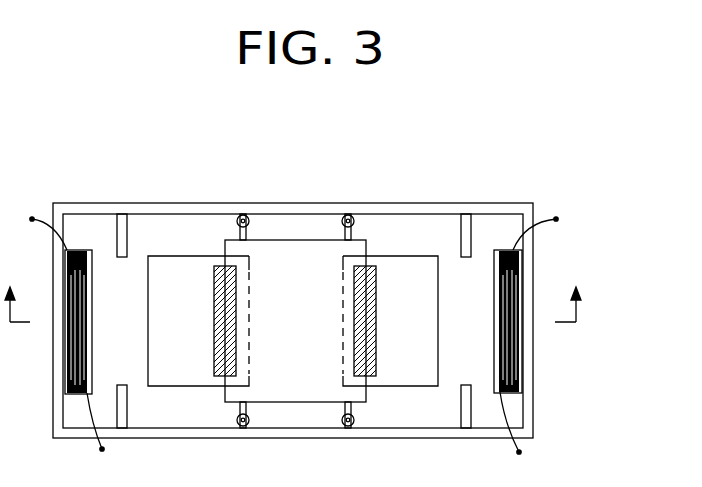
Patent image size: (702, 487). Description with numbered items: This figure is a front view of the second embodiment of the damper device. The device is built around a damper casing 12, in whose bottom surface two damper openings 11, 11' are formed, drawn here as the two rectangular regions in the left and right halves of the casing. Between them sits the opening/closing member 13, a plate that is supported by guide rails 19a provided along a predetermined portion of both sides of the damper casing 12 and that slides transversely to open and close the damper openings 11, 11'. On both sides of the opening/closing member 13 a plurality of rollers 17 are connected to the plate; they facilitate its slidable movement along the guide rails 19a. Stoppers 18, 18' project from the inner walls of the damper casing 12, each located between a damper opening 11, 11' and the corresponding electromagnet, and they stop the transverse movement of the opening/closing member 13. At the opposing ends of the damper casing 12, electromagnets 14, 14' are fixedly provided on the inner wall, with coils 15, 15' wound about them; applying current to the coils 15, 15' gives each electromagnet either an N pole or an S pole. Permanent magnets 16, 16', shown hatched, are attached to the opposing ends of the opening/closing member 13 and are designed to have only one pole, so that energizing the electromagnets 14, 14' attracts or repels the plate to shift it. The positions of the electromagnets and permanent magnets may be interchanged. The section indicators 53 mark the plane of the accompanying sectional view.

The damper opening 11 is at (198, 270).
The damper opening 11' is at (390, 270).
The damper casing 12 is at (114, 204).
The opening/closing member 13 is at (280, 240).
The electromagnet 14 is at (49, 322).
The electromagnet 14' is at (547, 325).
The coil 15 is at (72, 274).
The coil 15' is at (524, 274).
The permanent magnet 16 is at (219, 372).
The permanent magnet 16' is at (378, 376).
The roller 17 is at (253, 204).
The stopper 18 is at (143, 316).
The stopper 18' is at (451, 320).
The guide rail 19a is at (522, 210).
The section line 53 is at (292, 320).